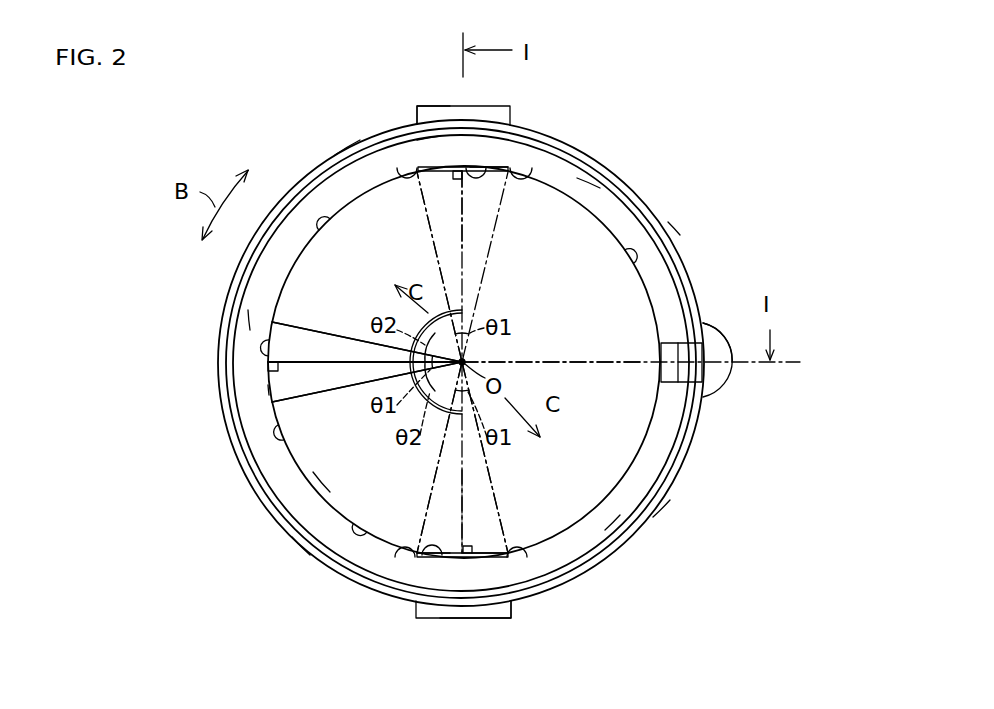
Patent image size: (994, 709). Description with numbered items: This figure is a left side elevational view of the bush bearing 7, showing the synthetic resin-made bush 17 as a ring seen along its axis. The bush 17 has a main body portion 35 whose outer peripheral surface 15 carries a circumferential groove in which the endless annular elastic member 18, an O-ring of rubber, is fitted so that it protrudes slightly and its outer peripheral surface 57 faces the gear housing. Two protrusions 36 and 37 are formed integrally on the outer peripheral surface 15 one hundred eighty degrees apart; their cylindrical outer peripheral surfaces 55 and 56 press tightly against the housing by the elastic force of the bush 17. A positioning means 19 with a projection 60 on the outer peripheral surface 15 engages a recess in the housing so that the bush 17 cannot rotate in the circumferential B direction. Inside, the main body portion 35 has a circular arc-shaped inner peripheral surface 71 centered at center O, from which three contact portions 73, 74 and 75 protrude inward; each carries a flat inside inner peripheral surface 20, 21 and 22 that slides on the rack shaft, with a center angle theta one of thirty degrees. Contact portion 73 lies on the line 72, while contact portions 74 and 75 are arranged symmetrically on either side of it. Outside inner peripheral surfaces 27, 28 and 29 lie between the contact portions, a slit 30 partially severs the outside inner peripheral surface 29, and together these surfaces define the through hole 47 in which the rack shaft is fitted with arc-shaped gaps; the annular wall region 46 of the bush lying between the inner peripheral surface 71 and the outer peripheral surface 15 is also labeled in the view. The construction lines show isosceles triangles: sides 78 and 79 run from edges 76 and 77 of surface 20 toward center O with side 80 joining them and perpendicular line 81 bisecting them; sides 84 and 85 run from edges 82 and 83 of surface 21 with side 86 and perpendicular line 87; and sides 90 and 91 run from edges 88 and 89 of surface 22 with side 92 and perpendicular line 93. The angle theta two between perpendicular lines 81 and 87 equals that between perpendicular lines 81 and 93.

The bush bearing 7 is at (660, 178).
The outer peripheral surface 15 is at (292, 537).
The bush 17 is at (335, 155).
The endless annular elastic member 18 is at (653, 517).
The positioning means 19 is at (722, 397).
The inside inner peripheral surface 20 is at (270, 345).
The inside inner peripheral surface 21 is at (497, 167).
The inside inner peripheral surface 22 is at (417, 553).
The outside inner peripheral surface 27 is at (323, 220).
The outside inner peripheral surface 28 is at (283, 442).
The outside inner peripheral surface 29 is at (633, 261).
The slit 30 is at (688, 365).
The main body portion 35 is at (577, 178).
The protrusion 36 is at (428, 112).
The protrusion 37 is at (468, 613).
The inner peripheral portion 46 is at (248, 310).
The through hole 47 is at (313, 472).
The outer peripheral surface 55 is at (450, 105).
The outer peripheral surface 56 is at (503, 617).
The outer peripheral surface 57 is at (668, 222).
The projection 60 is at (716, 340).
The inner peripheral surface 71 is at (357, 528).
The line 72 is at (542, 360).
The contact portion 73 is at (266, 368).
The contact portion 74 is at (452, 167).
The contact portion 75 is at (448, 558).
The edge 76 is at (268, 322).
The edge 77 is at (268, 402).
The side 78 is at (368, 330).
The side 79 is at (362, 393).
The side 80 is at (267, 382).
The perpendicular line 81 is at (332, 360).
The edge 82 is at (513, 170).
The edge 83 is at (398, 177).
The side 84 is at (494, 232).
The side 85 is at (430, 232).
The side 86 is at (417, 140).
The perpendicular line 87 is at (463, 230).
The edge 88 is at (397, 549).
The edge 89 is at (525, 548).
The side 90 is at (432, 487).
The side 91 is at (492, 487).
The side 92 is at (477, 556).
The perpendicular line 93 is at (462, 492).